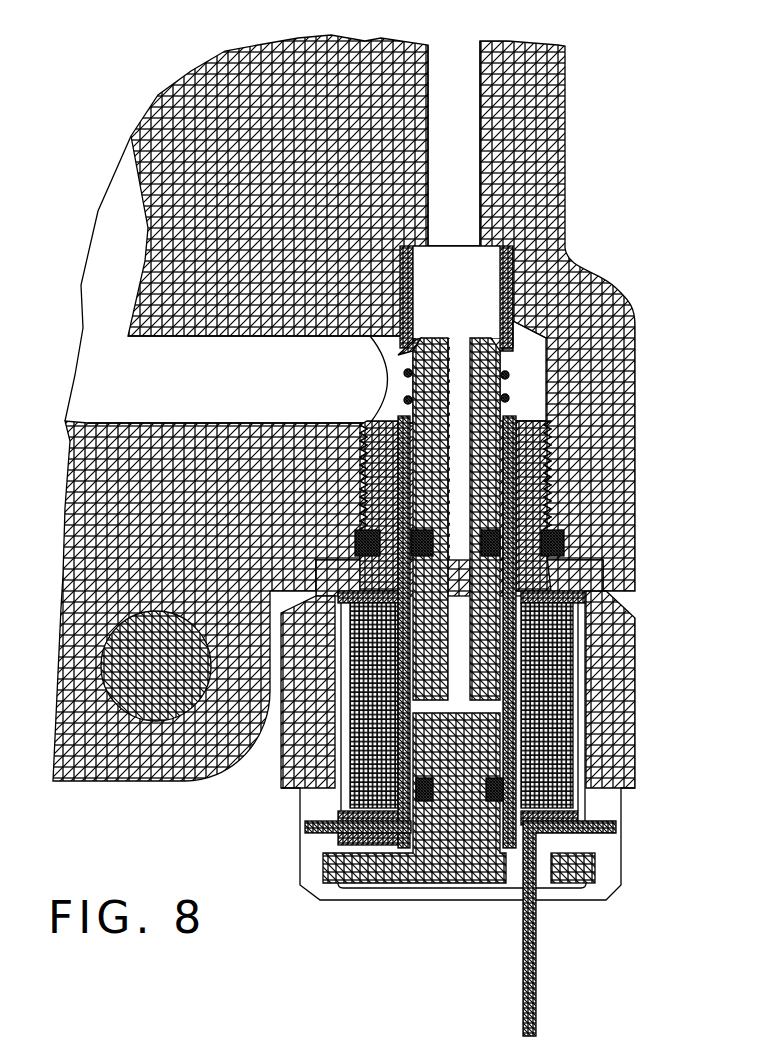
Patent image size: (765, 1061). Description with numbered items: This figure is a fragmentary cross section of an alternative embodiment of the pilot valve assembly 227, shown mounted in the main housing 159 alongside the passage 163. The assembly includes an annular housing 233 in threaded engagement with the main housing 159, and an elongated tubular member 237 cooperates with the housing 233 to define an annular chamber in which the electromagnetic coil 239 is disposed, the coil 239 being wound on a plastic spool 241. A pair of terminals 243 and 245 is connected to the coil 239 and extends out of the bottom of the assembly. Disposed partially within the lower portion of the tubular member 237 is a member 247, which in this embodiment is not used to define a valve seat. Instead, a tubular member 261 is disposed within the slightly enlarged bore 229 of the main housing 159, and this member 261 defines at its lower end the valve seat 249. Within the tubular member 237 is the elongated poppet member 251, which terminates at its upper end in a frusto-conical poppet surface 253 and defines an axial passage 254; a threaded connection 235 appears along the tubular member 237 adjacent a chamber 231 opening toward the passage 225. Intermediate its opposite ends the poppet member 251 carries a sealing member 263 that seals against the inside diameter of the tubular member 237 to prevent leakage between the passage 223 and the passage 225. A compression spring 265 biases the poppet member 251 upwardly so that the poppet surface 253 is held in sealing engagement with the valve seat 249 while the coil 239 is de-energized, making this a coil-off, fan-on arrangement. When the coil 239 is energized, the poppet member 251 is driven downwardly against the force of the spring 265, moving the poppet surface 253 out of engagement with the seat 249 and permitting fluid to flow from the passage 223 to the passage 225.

The main housing 159 is at (527, 114).
The passage bore 163 is at (124, 194).
The passage 223 is at (425, 153).
The passage 225 is at (226, 328).
The pilot valve assembly 227 is at (432, 943).
The slightly enlarged bore 229 is at (496, 262).
The chamber 231 is at (533, 393).
The annular housing 233 is at (602, 693).
The threads 235 is at (395, 447).
The elongated tubular member 237 is at (498, 480).
The electromagnetic coil 239 is at (532, 665).
The plastic spool 241 is at (515, 750).
The terminal 243 is at (528, 942).
The terminal 245 is at (310, 828).
The member 247 is at (448, 858).
The valve seat 249 is at (422, 330).
The elongated poppet member 251 is at (478, 440).
The frusto-conical poppet surface 253 is at (508, 346).
The axial passage 254 is at (445, 390).
The tubular member 261 is at (392, 262).
The sealing member 263 is at (395, 503).
The compression spring 265 is at (396, 367).